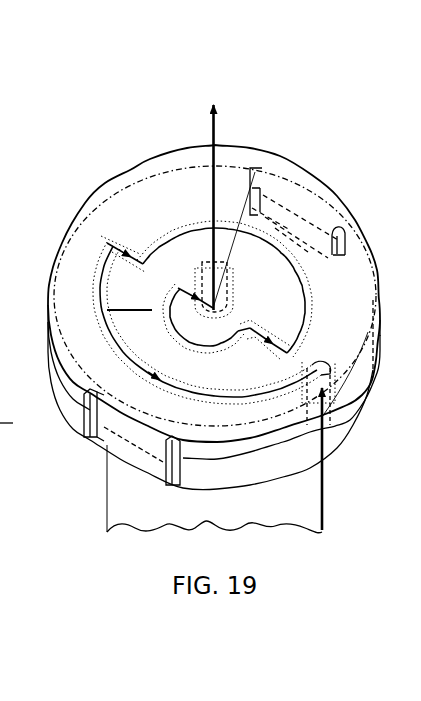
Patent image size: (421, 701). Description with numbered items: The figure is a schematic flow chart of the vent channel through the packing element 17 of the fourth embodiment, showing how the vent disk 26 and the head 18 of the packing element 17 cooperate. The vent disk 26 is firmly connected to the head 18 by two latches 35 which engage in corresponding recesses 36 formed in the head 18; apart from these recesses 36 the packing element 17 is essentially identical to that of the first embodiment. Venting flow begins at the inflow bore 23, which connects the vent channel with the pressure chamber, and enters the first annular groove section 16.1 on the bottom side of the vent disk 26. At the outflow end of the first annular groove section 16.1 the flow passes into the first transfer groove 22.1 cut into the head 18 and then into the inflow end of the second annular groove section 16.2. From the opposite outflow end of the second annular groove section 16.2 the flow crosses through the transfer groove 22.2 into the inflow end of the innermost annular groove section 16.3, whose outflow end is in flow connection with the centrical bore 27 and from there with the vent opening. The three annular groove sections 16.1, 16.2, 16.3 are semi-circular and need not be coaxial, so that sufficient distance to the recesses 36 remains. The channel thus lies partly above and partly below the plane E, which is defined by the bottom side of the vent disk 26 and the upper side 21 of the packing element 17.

The packing element 17 is at (327, 511).
The head 18 is at (381, 352).
The upper side 21 is at (153, 194).
The first transfer groove 22.1 is at (103, 243).
The transfer groove 22.2 is at (291, 353).
The inflow bore 23 is at (373, 376).
The vent disk 26 is at (345, 212).
The centrical bore 27 is at (270, 222).
The latch 35 is at (103, 440).
The recess 36 is at (294, 206).
The first annular groove section 16.1 is at (327, 447).
The second annular groove section 16.2 is at (236, 218).
The innermost annular groove section 16.3 is at (100, 310).
The plane E is at (178, 200).